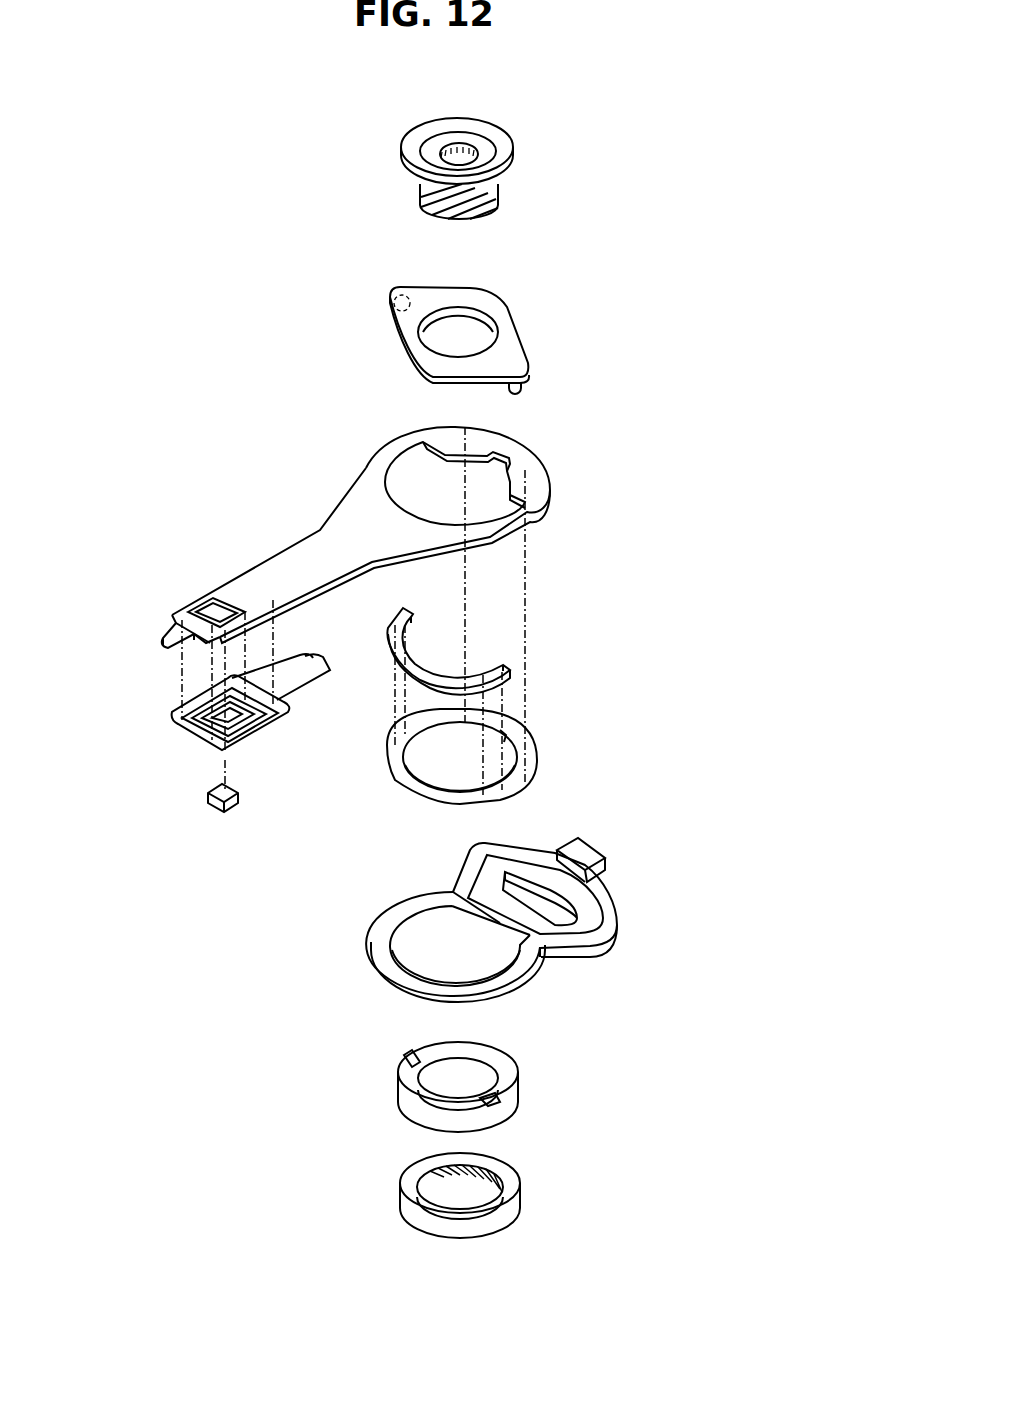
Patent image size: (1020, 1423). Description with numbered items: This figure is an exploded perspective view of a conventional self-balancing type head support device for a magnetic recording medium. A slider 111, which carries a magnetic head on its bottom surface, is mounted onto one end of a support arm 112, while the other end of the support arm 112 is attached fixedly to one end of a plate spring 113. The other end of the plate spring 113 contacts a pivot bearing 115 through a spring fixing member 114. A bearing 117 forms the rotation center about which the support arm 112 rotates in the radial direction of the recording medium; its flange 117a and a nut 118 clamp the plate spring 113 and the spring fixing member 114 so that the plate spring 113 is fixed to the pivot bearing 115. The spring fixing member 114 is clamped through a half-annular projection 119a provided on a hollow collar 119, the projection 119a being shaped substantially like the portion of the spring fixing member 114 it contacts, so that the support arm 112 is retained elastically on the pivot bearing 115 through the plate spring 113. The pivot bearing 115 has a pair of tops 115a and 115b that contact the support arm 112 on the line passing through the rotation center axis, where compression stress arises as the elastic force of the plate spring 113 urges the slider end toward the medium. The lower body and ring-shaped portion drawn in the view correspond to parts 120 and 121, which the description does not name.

The slider 111 is at (208, 797).
The support arm 112 is at (287, 563).
The plate spring 113 is at (512, 733).
The spring fixing member 114 is at (403, 622).
The pivot bearing 115 is at (512, 350).
The top 115a is at (523, 386).
The top 115b is at (385, 317).
The bearing 117 is at (502, 182).
The flange 117a is at (507, 148).
The nut 118 is at (508, 1192).
The hollow collar 119 is at (497, 1060).
The projection 119a is at (490, 1100).
The housing 120 is at (490, 877).
The ring portion 121 is at (408, 970).